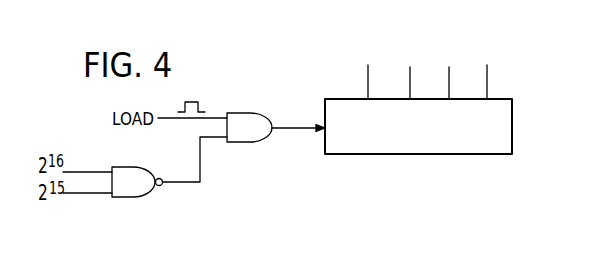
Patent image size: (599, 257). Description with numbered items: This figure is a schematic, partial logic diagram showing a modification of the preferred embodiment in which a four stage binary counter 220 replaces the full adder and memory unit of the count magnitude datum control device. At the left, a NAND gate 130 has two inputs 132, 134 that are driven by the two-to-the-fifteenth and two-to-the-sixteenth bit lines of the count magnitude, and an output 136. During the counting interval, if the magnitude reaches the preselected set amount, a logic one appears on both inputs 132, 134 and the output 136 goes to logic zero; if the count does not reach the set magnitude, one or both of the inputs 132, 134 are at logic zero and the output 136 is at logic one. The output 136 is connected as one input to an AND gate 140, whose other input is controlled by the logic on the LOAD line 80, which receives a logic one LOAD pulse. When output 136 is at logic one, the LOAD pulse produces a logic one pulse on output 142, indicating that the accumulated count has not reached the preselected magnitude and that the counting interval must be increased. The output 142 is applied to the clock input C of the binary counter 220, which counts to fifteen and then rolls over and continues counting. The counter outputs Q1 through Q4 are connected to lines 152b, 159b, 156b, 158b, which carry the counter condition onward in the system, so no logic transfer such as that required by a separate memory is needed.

The input 134 is at (88, 172).
The input 132 is at (88, 194).
The NAND gate 130 is at (133, 190).
The output 136 is at (201, 172).
The LOAD line 80 is at (190, 118).
The AND gate 140 is at (252, 122).
The output 142 is at (293, 130).
The binary counter 220 is at (512, 123).
The line 158b is at (368, 78).
The line 156b is at (410, 75).
The line 159b is at (450, 72).
The line 152b is at (487, 80).